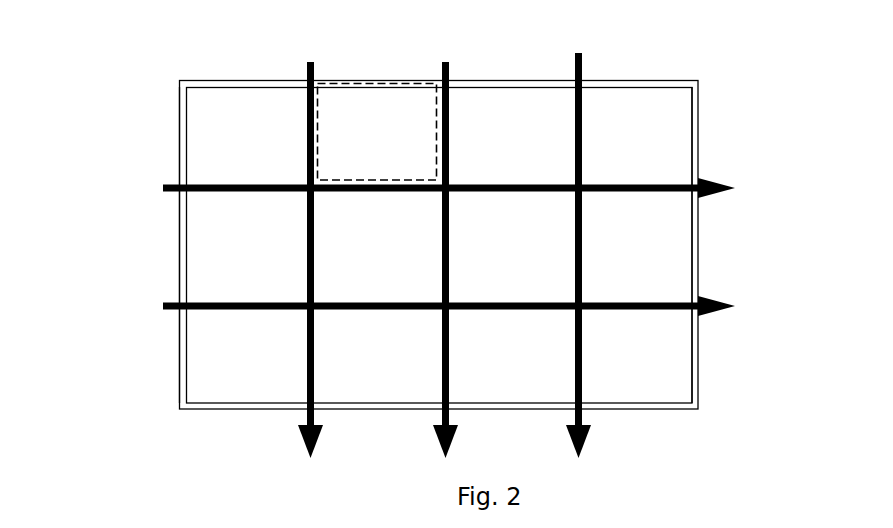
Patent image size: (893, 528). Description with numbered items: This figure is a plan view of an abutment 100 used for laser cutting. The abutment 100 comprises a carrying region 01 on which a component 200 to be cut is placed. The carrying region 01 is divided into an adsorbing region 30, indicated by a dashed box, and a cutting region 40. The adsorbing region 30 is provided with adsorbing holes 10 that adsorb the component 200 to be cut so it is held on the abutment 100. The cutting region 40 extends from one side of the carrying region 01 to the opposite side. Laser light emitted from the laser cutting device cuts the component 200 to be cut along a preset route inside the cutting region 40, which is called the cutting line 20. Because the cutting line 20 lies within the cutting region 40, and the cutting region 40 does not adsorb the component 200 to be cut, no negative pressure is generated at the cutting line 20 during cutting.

The carrying region 01 is at (186, 108).
The adsorbing hole 10 is at (692, 166).
The cutting line 20 is at (582, 62).
The adsorbing region 30 is at (410, 72).
The cutting region 40 is at (692, 325).
The abutment 100 is at (698, 88).
The component to be cut 200 is at (672, 113).